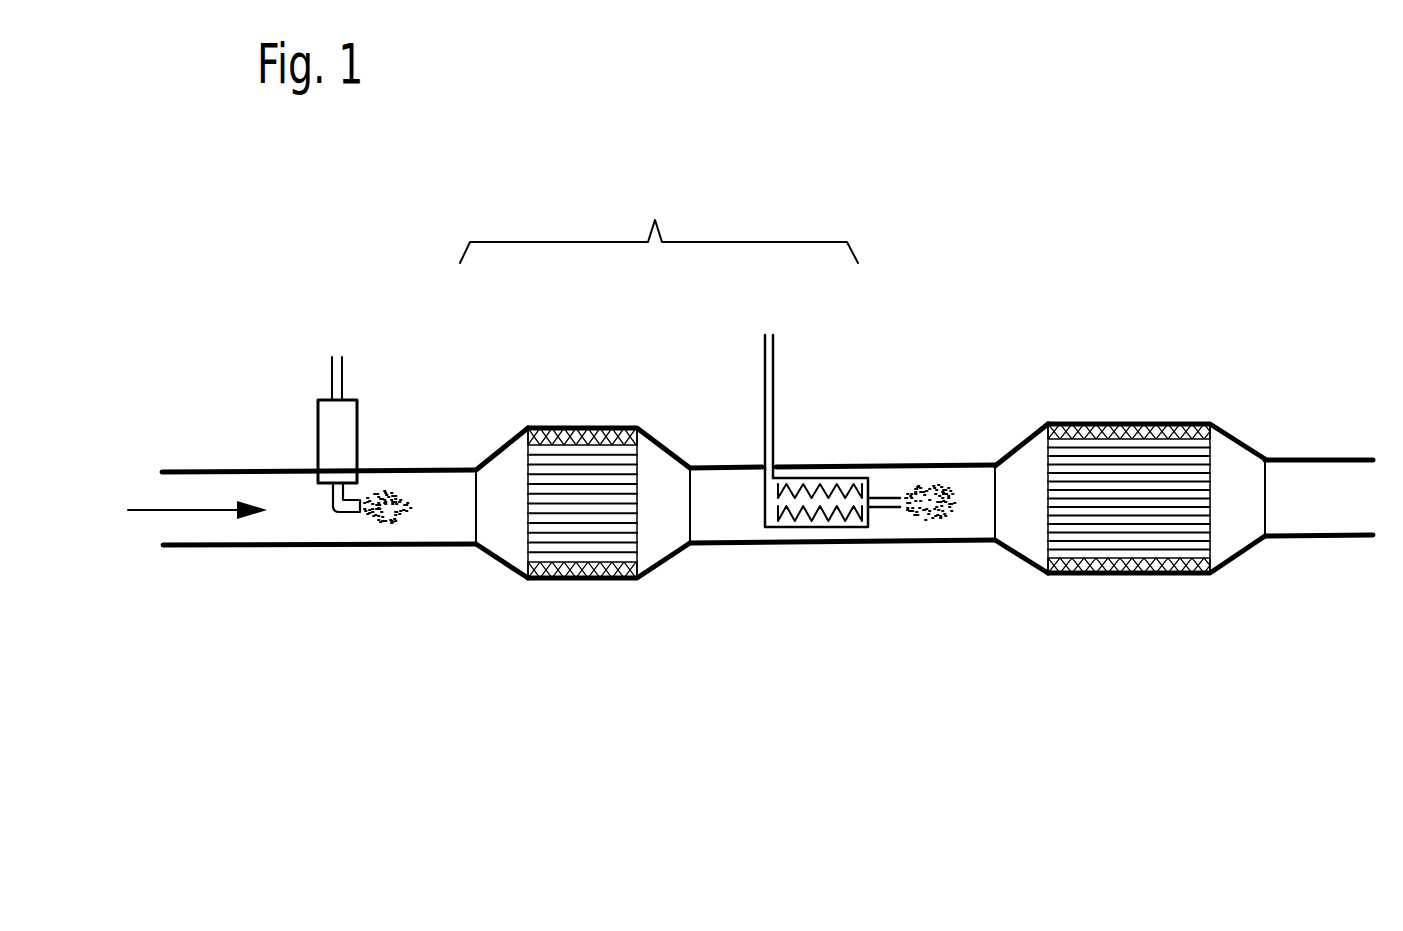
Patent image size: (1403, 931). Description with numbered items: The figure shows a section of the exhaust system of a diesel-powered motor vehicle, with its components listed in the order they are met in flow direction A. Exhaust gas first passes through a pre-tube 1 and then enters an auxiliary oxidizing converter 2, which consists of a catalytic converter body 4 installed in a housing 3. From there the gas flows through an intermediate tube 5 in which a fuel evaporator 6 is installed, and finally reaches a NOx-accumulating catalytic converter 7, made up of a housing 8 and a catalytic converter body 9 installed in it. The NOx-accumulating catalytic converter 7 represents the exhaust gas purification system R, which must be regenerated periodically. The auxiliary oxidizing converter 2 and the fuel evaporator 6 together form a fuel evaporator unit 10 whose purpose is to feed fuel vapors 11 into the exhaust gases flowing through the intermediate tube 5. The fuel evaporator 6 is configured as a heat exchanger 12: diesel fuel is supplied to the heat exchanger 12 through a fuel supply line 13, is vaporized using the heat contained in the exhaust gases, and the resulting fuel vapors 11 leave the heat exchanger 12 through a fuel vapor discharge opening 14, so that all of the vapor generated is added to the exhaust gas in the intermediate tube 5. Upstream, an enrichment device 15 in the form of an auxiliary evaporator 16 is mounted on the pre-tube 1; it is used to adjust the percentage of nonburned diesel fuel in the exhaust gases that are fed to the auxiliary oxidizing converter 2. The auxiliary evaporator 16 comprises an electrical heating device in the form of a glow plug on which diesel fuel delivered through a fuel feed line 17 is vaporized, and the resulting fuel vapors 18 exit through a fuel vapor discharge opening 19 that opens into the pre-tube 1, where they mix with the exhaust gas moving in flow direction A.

The pre-tube 1 is at (187, 548).
The auxiliary oxidizing converter 2 is at (565, 553).
The housing 3 is at (503, 567).
The catalytic converter body 4 is at (572, 527).
The intermediate tube 5 is at (889, 546).
The fuel evaporator 6 is at (789, 477).
The NOx-accumulating catalytic converter 7 is at (1124, 547).
The housing 8 is at (1024, 560).
The catalytic converter body 9 is at (1127, 528).
The fuel evaporator unit 10 is at (721, 402).
The fuel vapors 11 is at (947, 487).
The heat exchanger 12 is at (813, 510).
The fuel supply line 13 is at (762, 398).
The fuel vapor discharge opening 14 is at (888, 497).
The enrichment device 15 is at (333, 456).
The auxiliary evaporator 16 is at (318, 440).
The fuel feed line 17 is at (330, 372).
The fuel vapors 18 is at (391, 522).
The fuel vapor discharge opening 19 is at (335, 512).
The flow direction A is at (139, 509).
The exhaust gas purification system R is at (1148, 347).